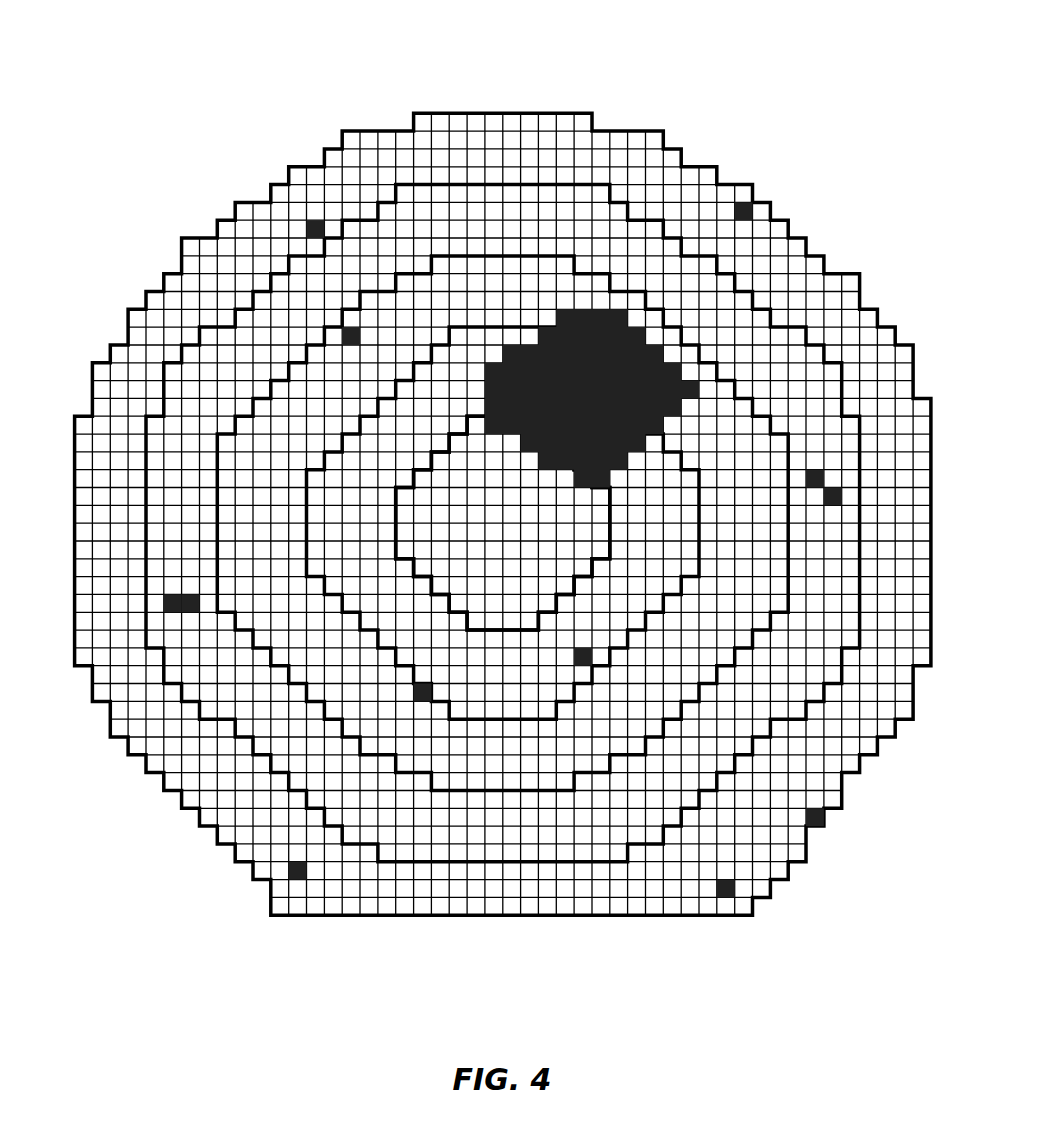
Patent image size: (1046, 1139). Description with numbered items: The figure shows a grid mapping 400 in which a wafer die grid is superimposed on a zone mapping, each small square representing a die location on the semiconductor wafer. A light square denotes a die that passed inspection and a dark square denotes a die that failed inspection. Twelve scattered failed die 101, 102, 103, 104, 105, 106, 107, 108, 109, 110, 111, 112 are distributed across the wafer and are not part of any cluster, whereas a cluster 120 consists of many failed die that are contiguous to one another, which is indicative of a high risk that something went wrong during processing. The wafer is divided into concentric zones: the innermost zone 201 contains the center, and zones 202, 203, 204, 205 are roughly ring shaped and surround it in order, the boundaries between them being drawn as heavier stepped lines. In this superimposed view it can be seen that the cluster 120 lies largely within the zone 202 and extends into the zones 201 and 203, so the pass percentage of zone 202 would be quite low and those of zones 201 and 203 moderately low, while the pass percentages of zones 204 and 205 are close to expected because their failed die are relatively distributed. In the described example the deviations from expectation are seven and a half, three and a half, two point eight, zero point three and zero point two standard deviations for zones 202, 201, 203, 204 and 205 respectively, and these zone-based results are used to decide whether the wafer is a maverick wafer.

The grid mapping 400 is at (487, 34).
The failed die 101 is at (745, 209).
The failed die 102 is at (816, 474).
The failed die 103 is at (834, 494).
The failed die 104 is at (816, 819).
The failed die 105 is at (727, 891).
The failed die 106 is at (584, 661).
The failed die 107 is at (422, 696).
The failed die 108 is at (296, 874).
The failed die 109 is at (190, 606).
The failed die 110 is at (173, 600).
The failed die 111 is at (344, 337).
The failed die 112 is at (313, 228).
The cluster 120 is at (630, 332).
The zone 201 is at (424, 513).
The zone 202 is at (369, 462).
The zone 203 is at (282, 425).
The zone 204 is at (202, 392).
The zone 205 is at (174, 310).